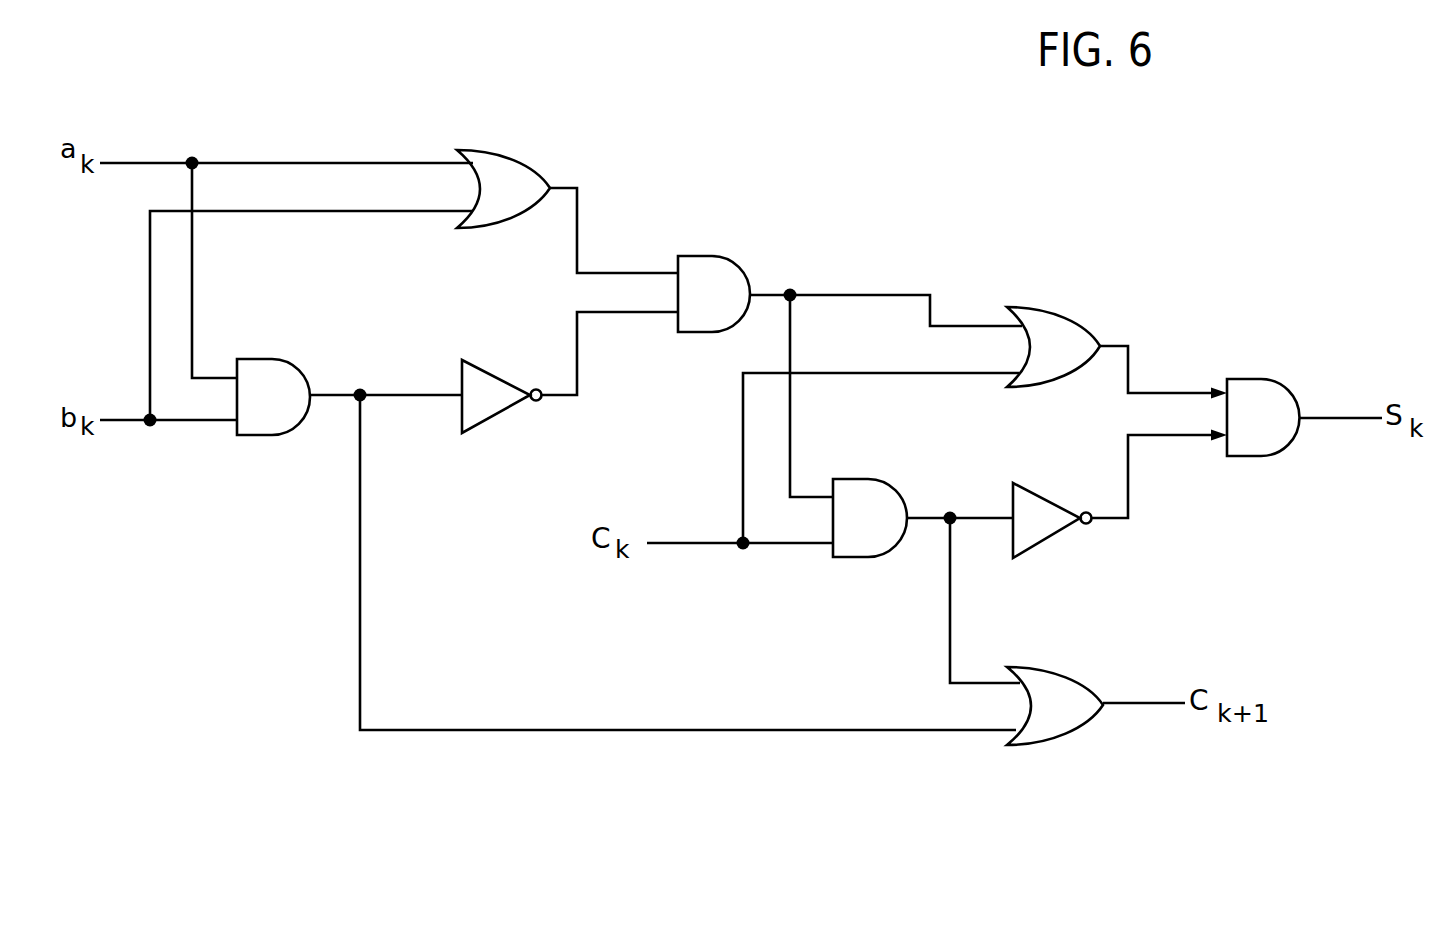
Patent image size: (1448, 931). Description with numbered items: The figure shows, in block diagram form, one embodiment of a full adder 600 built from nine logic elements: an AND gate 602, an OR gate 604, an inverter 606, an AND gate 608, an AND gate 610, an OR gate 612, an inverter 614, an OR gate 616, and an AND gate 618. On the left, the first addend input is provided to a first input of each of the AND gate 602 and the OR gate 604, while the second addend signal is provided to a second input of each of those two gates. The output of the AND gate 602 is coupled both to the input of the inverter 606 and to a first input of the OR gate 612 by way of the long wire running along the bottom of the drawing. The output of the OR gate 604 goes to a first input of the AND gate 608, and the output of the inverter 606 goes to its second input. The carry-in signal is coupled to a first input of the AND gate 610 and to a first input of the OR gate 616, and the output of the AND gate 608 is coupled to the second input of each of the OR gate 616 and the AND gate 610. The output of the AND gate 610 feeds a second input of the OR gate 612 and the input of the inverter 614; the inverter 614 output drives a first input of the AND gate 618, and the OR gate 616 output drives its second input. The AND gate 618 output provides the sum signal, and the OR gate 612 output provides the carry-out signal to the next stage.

The full adder 600 is at (394, 814).
The AND gate 602 is at (265, 358).
The OR gate 604 is at (483, 150).
The inverter 606 is at (485, 372).
The AND gate 608 is at (708, 255).
The AND gate 610 is at (857, 477).
The OR gate 612 is at (1033, 665).
The inverter 614 is at (1053, 475).
The OR gate 616 is at (1027, 308).
The AND gate 618 is at (1270, 360).